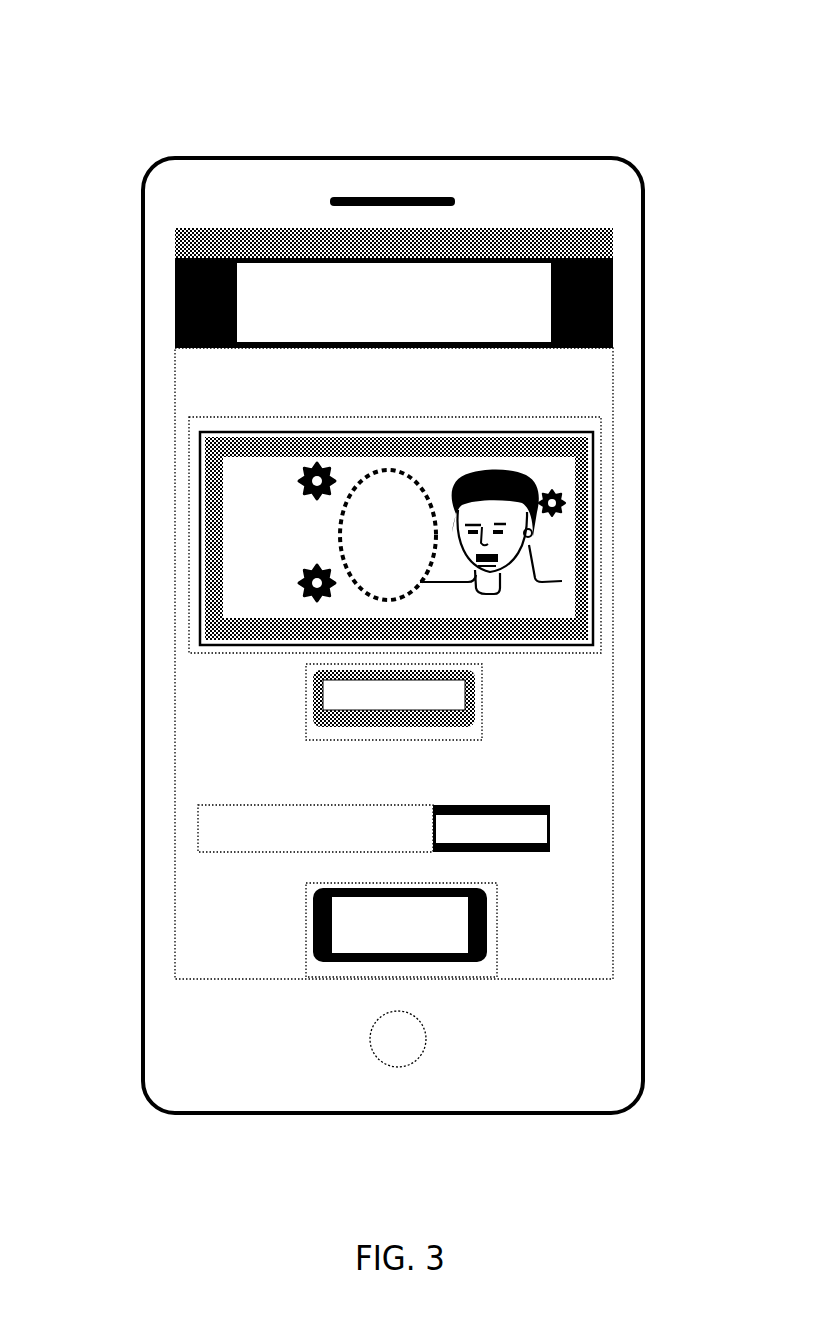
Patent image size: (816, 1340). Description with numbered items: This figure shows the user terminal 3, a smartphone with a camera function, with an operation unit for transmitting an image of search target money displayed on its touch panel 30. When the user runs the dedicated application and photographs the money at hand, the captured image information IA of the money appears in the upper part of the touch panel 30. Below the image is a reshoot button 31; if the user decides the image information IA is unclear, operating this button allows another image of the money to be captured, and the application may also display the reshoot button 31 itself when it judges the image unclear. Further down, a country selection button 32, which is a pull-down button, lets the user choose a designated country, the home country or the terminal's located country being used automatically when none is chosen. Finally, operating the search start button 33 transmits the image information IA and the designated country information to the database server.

The user terminal 3 is at (646, 76).
The touch panel 30 is at (173, 603).
The image information IA is at (593, 548).
The reshoot button 31 is at (477, 695).
The country selection button 32 is at (550, 812).
The search start button 33 is at (487, 922).